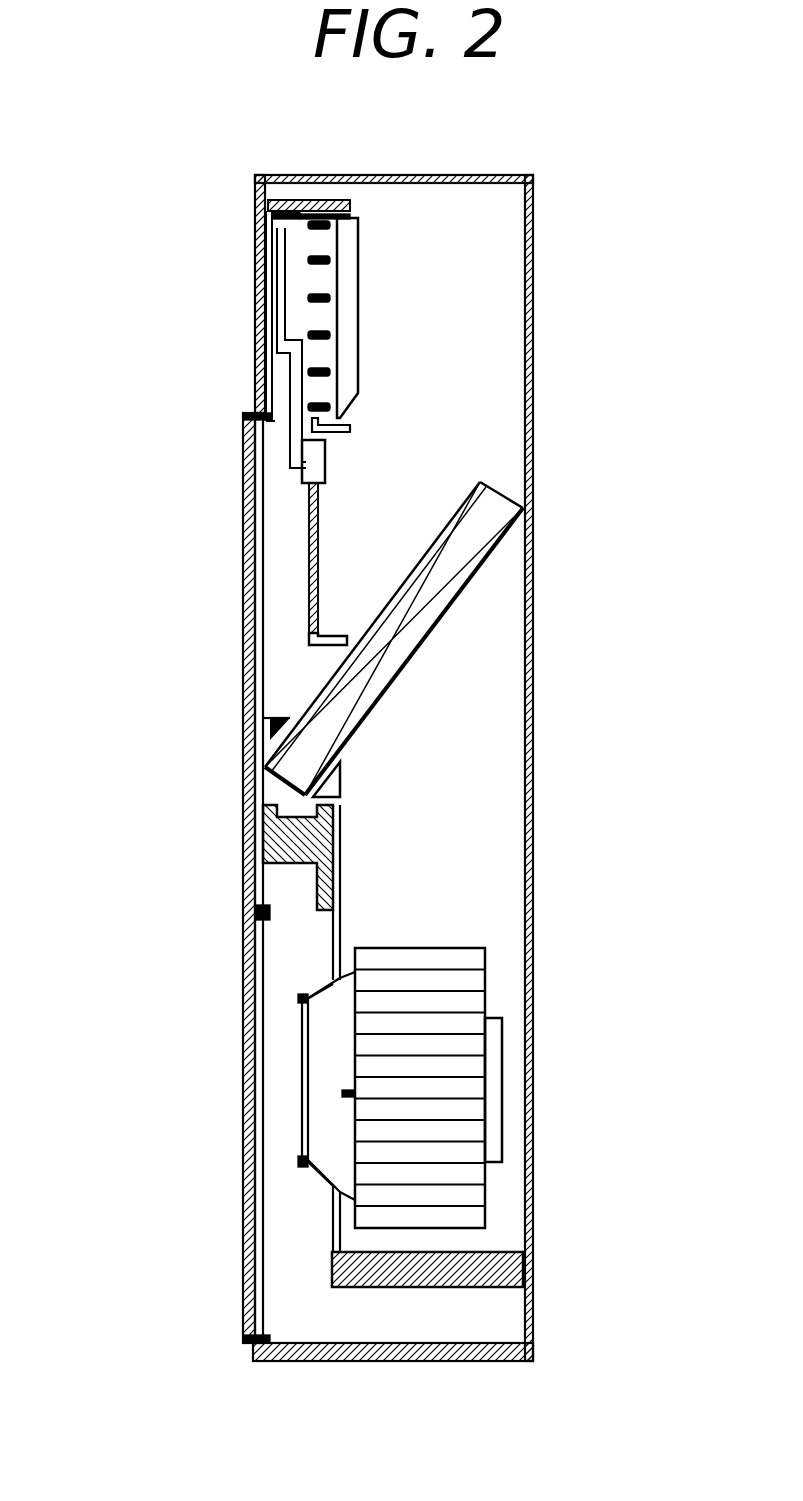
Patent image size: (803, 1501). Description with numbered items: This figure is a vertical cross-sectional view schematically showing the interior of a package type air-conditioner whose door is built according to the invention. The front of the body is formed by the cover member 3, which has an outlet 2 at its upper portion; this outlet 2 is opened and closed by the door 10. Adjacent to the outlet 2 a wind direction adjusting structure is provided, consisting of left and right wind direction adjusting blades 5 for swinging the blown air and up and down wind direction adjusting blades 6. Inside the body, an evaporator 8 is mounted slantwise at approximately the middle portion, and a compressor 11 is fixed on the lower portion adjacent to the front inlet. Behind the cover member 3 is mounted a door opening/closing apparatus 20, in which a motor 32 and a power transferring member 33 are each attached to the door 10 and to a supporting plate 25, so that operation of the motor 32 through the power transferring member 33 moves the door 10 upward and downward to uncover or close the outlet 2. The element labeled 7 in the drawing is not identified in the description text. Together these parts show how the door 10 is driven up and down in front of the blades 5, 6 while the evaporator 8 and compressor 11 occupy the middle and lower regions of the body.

The outlet 2 is at (258, 233).
The cover member 3 is at (236, 800).
The left and right wind direction adjusting blades 5 is at (348, 350).
The up and down wind direction adjusting blades 6 is at (317, 260).
The cover panel 7 is at (243, 1098).
The evaporator 8 is at (410, 645).
The door 10 is at (257, 293).
The compressor 11 is at (463, 1095).
The door opening/closing apparatus 20 is at (462, 426).
The supporting plate 25 is at (310, 615).
The motor 32 is at (308, 473).
The power transferring member 33 is at (253, 343).